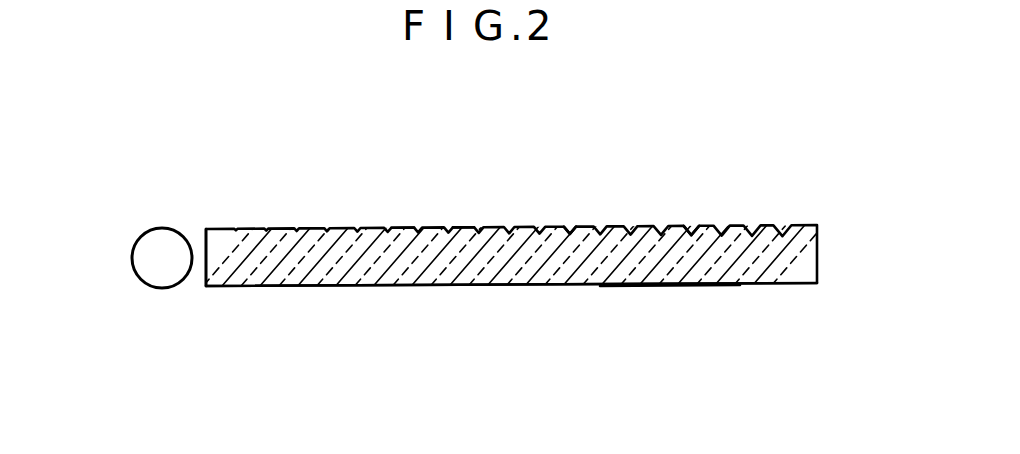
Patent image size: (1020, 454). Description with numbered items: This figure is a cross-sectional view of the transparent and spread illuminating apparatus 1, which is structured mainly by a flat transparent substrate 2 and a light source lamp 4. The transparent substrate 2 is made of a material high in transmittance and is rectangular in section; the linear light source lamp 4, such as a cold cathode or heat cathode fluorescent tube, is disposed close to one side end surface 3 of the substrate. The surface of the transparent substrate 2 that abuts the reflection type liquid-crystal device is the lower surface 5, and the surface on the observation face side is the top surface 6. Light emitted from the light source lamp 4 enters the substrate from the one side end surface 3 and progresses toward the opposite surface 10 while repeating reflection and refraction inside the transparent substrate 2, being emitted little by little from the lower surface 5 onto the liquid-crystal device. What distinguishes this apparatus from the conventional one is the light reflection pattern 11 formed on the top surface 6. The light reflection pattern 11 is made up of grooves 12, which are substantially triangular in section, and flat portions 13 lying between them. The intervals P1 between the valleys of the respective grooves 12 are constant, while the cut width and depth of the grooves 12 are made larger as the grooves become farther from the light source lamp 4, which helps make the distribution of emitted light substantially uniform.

The transparent and spread illuminating apparatus 1 is at (720, 172).
The transparent substrate 2 is at (670, 285).
The one side end surface 3 is at (199, 229).
The light source lamp 4 is at (160, 262).
The lower surface 5 is at (335, 286).
The top surface 6 is at (468, 229).
The opposite surface 10 is at (817, 240).
The light reflection pattern 11 is at (404, 229).
The grooves 12 is at (689, 226).
The flat portions 13 is at (583, 228).
The intervals of valleys of the grooves P1 is at (357, 229).